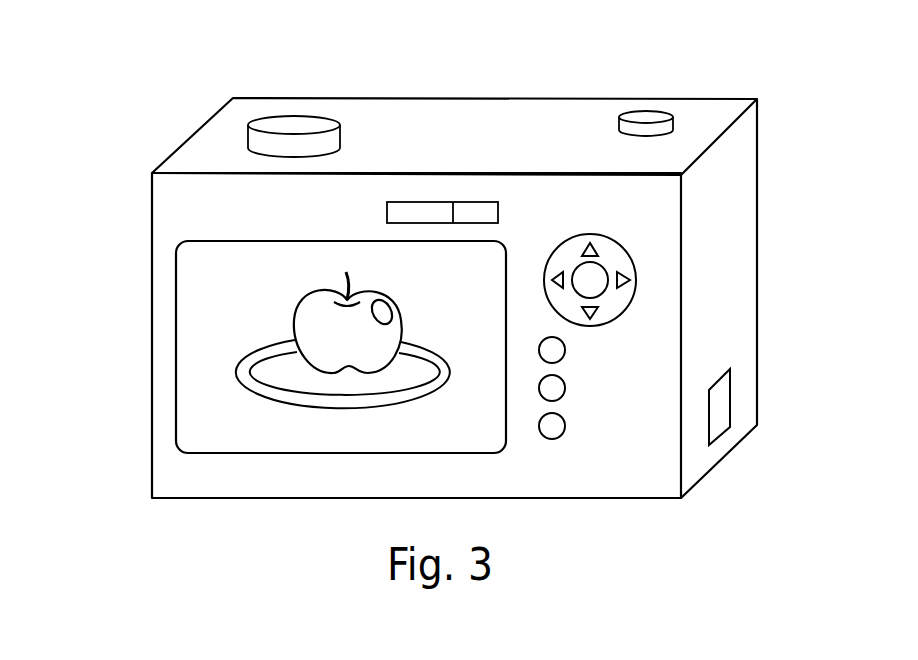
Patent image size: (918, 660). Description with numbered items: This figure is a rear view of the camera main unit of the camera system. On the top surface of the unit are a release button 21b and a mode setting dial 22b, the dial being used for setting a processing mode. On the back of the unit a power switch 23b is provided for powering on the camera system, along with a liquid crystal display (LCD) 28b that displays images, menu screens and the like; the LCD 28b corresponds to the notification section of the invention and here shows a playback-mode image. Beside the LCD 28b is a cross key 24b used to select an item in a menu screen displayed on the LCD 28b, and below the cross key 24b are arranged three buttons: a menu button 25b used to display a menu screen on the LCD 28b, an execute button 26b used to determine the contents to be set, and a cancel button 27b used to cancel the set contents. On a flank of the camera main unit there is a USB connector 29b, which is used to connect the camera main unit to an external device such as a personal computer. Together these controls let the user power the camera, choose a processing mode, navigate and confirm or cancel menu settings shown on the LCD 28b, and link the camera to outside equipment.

The release button 21b is at (648, 110).
The mode setting dial 22b is at (297, 116).
The power switch 23b is at (413, 202).
The cross key 24b is at (593, 274).
The menu button 25b is at (564, 342).
The execute button 26b is at (564, 381).
The cancel button 27b is at (562, 416).
The liquid crystal display (LCD) 28b is at (283, 302).
The USB connector 29b is at (718, 419).